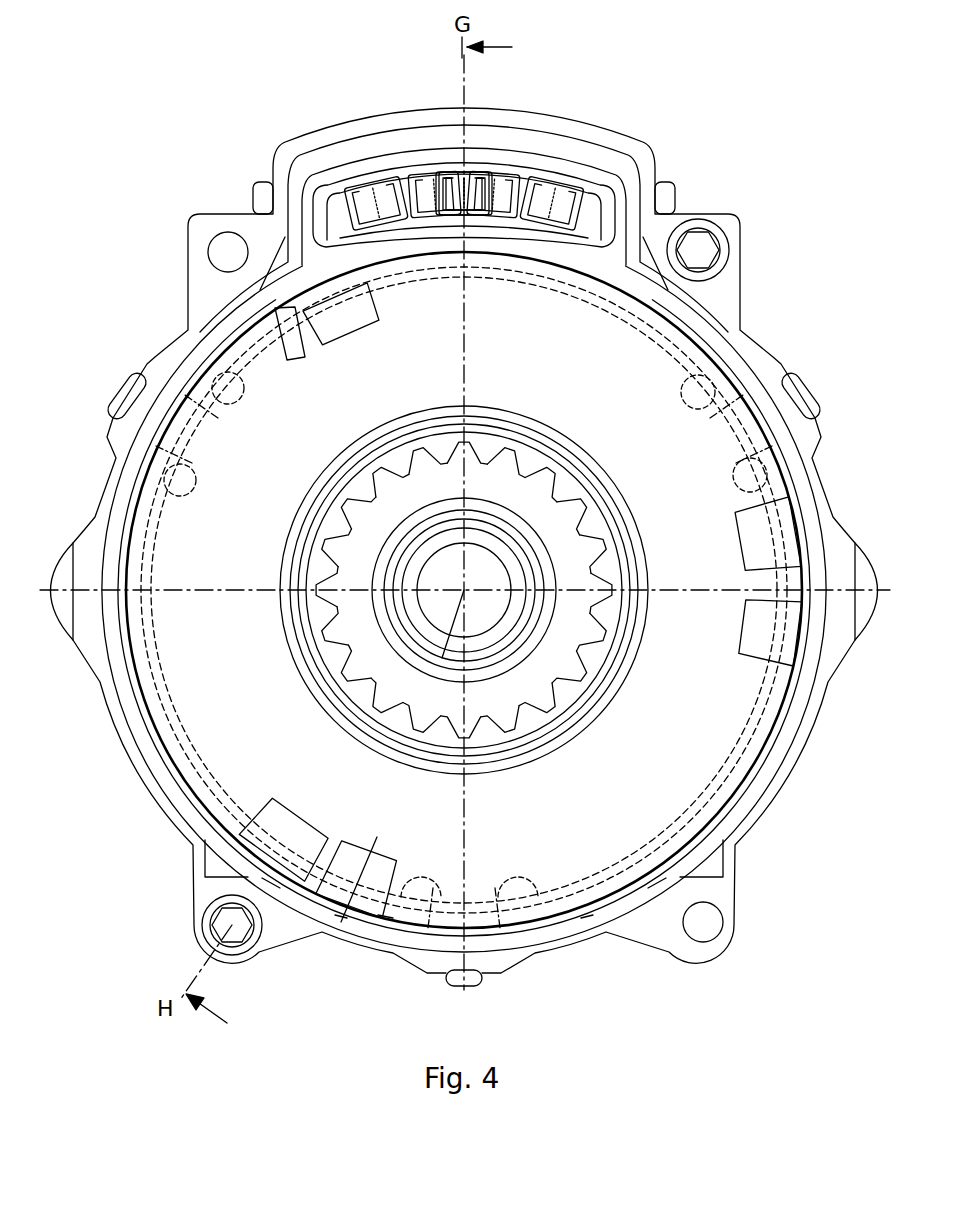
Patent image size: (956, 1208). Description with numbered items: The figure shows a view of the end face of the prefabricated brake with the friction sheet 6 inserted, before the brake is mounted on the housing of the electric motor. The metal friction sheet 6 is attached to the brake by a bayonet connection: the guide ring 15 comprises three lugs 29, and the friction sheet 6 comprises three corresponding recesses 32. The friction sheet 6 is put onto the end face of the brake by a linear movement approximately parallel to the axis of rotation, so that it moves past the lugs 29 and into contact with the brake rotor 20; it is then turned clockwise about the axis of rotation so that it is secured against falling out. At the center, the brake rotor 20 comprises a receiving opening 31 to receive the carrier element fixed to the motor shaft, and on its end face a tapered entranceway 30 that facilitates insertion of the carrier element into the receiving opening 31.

The friction sheet 6 is at (716, 703).
The guide ring 15 is at (592, 264).
The brake rotor 20 is at (552, 702).
The lugs 29 is at (262, 392).
The tapered entranceway 30 is at (604, 661).
The receiving opening 31 is at (550, 676).
The recesses 32 is at (300, 826).